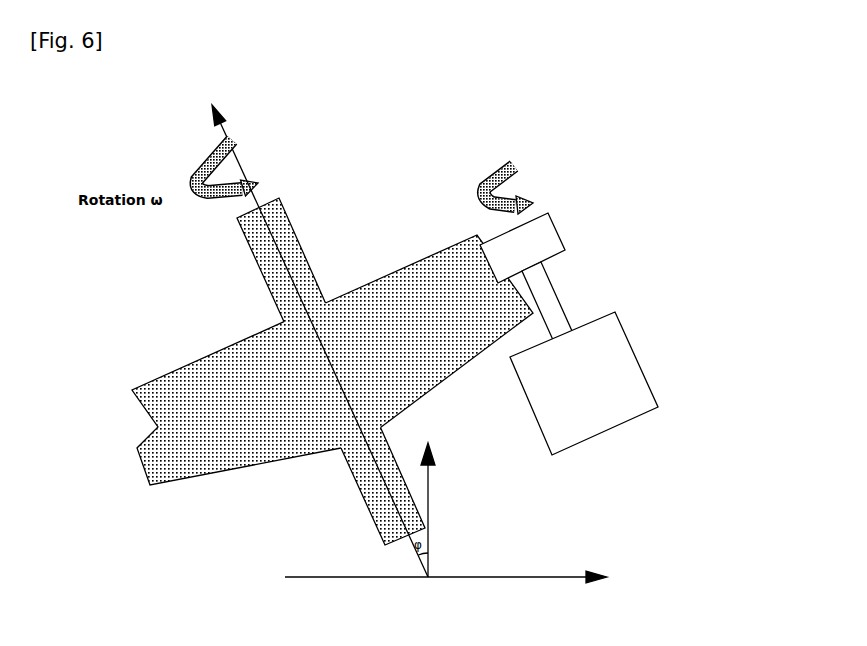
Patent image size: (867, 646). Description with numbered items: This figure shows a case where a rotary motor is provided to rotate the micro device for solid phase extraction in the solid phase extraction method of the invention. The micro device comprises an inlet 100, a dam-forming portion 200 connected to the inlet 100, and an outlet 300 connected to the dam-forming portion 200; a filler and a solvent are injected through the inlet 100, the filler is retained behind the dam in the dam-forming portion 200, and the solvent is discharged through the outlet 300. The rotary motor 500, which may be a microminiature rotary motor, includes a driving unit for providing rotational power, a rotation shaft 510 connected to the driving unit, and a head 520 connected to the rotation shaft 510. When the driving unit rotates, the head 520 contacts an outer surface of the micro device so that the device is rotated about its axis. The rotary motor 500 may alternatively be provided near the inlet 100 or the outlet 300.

The inlet 100 is at (244, 233).
The dam-forming portion 200 is at (158, 428).
The outlet 300 is at (373, 508).
The rotary motor 500 is at (608, 400).
The rotation shaft 510 is at (562, 287).
The head 520 is at (560, 222).